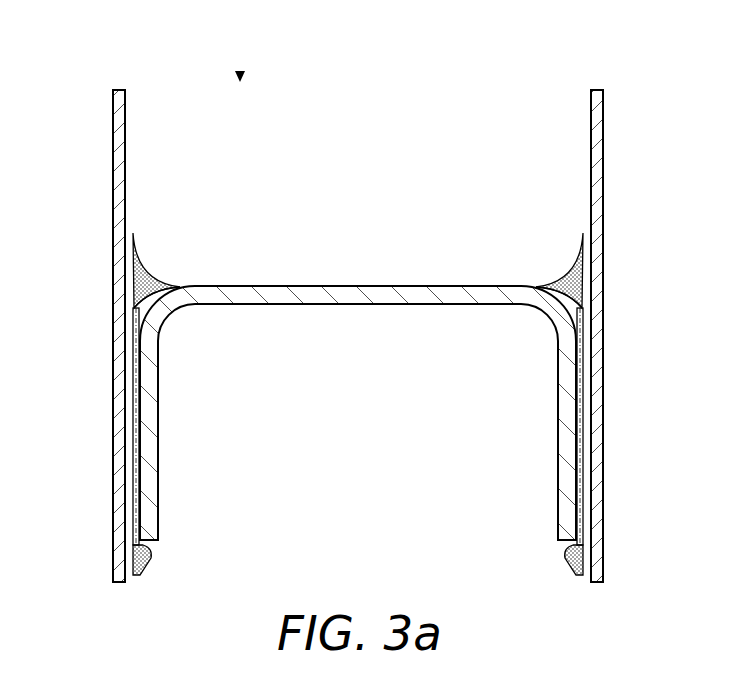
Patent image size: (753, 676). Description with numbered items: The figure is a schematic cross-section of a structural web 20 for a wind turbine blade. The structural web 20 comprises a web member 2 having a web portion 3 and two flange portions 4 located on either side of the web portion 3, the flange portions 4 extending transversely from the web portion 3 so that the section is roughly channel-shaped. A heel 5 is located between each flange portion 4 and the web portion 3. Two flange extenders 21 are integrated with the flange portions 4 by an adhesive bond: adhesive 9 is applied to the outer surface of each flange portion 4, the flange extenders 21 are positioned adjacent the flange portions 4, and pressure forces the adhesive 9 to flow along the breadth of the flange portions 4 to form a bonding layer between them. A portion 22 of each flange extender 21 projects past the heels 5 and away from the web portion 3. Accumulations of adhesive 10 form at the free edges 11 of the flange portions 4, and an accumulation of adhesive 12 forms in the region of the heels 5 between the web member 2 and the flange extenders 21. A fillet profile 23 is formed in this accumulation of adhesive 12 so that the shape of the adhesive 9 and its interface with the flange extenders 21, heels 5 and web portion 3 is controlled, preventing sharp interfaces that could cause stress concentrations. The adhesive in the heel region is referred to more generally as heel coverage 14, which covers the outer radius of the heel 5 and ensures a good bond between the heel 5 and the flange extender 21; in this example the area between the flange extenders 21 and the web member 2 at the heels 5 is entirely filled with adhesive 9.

The structural web 20 is at (240, 73).
The portion of the flange extenders 22 is at (113, 105).
The flange extenders 21 is at (119, 465).
The web member 2 is at (358, 290).
The web portion 3 is at (358, 306).
The flange portions 4 is at (156, 503).
The heel 5 is at (168, 316).
The adhesive 9 is at (133, 380).
The accumulation of adhesive 12 is at (137, 268).
The heel coverage 14 is at (137, 290).
The fillet profile 23 is at (143, 260).
The accumulations of adhesive 10 is at (143, 577).
The free edges 11 is at (156, 542).